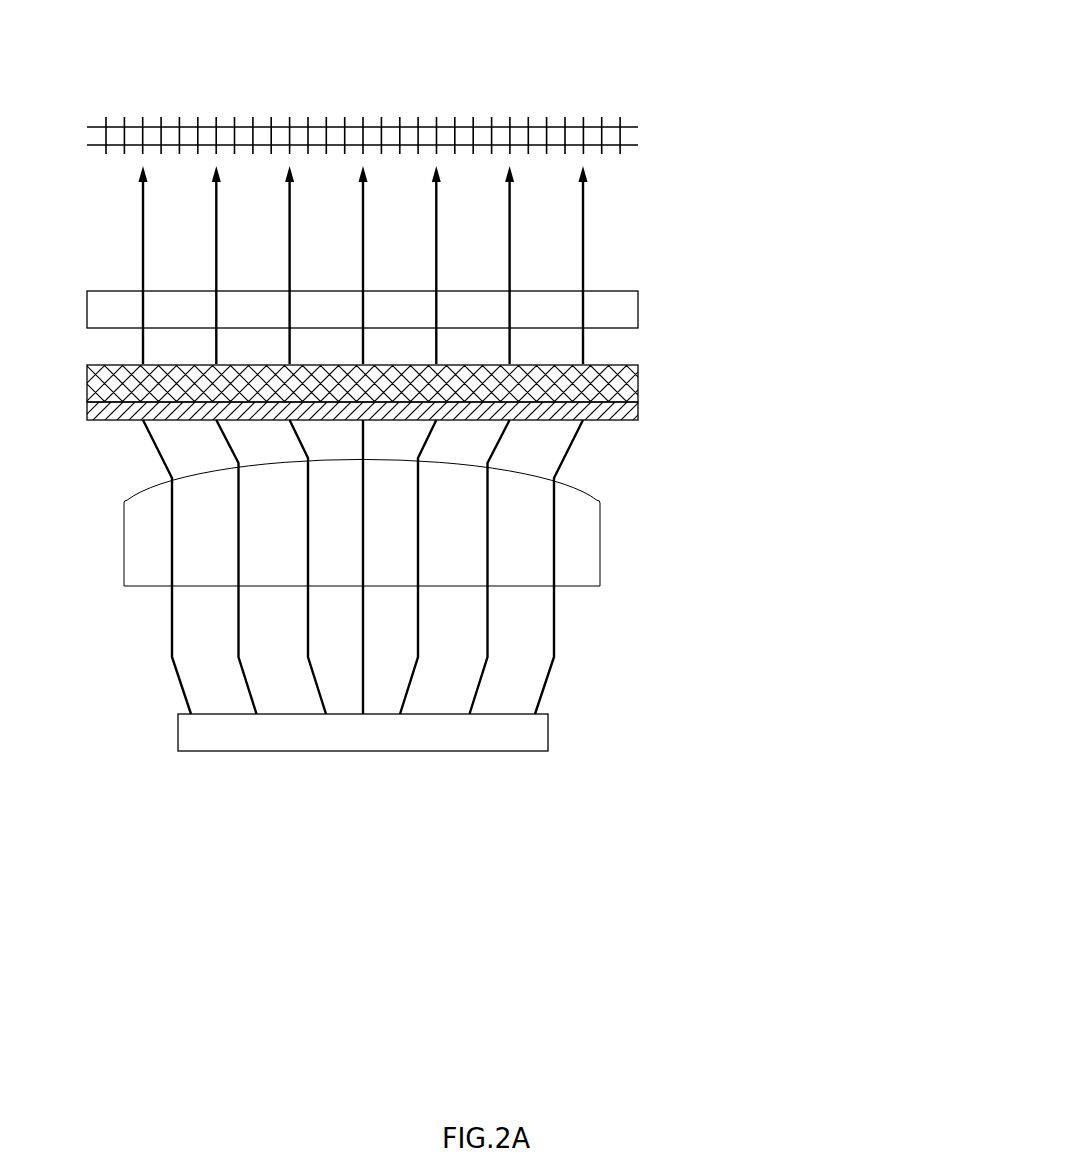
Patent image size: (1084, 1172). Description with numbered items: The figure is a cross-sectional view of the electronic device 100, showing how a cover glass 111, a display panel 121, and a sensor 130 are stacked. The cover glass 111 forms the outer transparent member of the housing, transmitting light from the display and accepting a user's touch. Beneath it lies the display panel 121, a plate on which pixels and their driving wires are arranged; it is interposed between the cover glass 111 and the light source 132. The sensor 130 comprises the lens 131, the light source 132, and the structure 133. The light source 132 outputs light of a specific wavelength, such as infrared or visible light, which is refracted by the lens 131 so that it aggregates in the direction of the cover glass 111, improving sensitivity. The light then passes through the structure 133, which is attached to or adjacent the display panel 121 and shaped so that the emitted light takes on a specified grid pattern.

The electronic device 100 is at (448, 96).
The cover glass 111 is at (638, 309).
The display panel 121 is at (638, 381).
The sensor 130 is at (466, 661).
The lens 131 is at (602, 548).
The light source 132 is at (548, 731).
The structure 133 is at (638, 408).